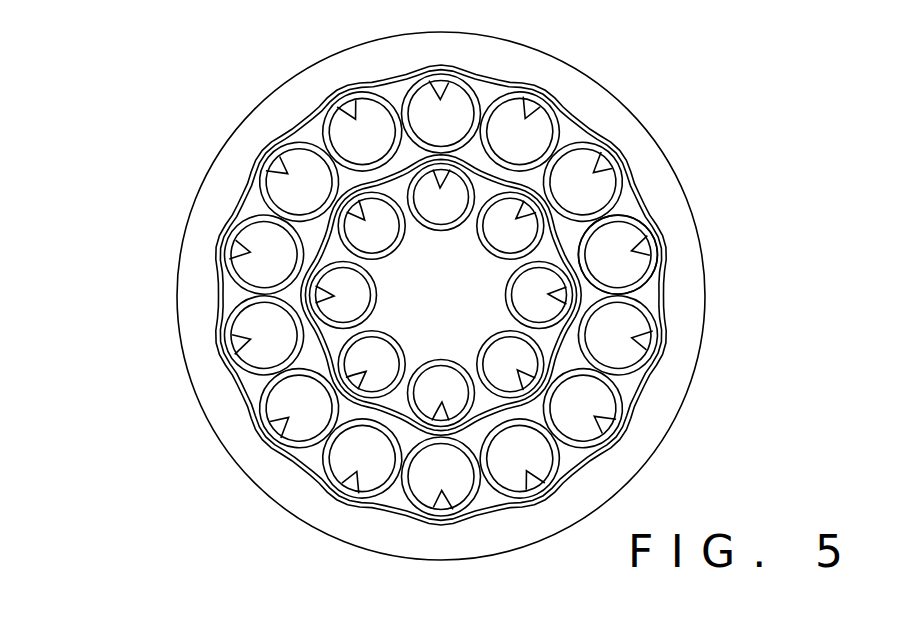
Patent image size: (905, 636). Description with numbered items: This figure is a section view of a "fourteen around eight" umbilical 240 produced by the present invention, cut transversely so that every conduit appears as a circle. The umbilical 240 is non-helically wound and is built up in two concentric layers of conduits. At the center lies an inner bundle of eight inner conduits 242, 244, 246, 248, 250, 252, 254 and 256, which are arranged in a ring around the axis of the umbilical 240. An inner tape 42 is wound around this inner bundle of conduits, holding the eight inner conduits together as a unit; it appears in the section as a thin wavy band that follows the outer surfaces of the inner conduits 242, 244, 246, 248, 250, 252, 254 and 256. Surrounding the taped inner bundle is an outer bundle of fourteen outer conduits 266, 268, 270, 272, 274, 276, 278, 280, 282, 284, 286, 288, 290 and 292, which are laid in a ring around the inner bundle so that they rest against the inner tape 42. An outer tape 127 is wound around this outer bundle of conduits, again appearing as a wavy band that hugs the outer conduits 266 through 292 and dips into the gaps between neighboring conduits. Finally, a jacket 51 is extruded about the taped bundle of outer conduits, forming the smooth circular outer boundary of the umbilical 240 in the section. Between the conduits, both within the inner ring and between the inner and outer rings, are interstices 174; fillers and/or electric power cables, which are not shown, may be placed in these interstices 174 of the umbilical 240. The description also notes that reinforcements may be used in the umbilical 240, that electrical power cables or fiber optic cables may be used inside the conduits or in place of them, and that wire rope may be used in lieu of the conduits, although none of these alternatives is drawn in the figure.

The umbilical 240 is at (158, 104).
The jacket 51 is at (195, 397).
The outer tape 127 is at (243, 203).
The interstices 174 is at (406, 154).
The inner tape 42 is at (610, 218).
The inner conduit 242 is at (449, 175).
The inner conduit 244 is at (537, 213).
The inner conduit 246 is at (556, 292).
The inner conduit 248 is at (540, 400).
The inner conduit 250 is at (458, 418).
The inner conduit 252 is at (372, 392).
The inner conduit 254 is at (333, 301).
The inner conduit 256 is at (335, 215).
The outer conduit 266 is at (425, 85).
The outer conduit 268 is at (528, 112).
The outer conduit 270 is at (595, 157).
The outer conduit 272 is at (632, 255).
The outer conduit 274 is at (634, 345).
The outer conduit 276 is at (595, 405).
The outer conduit 278 is at (541, 468).
The outer conduit 280 is at (420, 496).
The outer conduit 282 is at (353, 474).
The outer conduit 284 is at (262, 421).
The outer conduit 286 is at (237, 348).
The outer conduit 288 is at (247, 247).
The outer conduit 290 is at (275, 150).
The outer conduit 292 is at (333, 97).